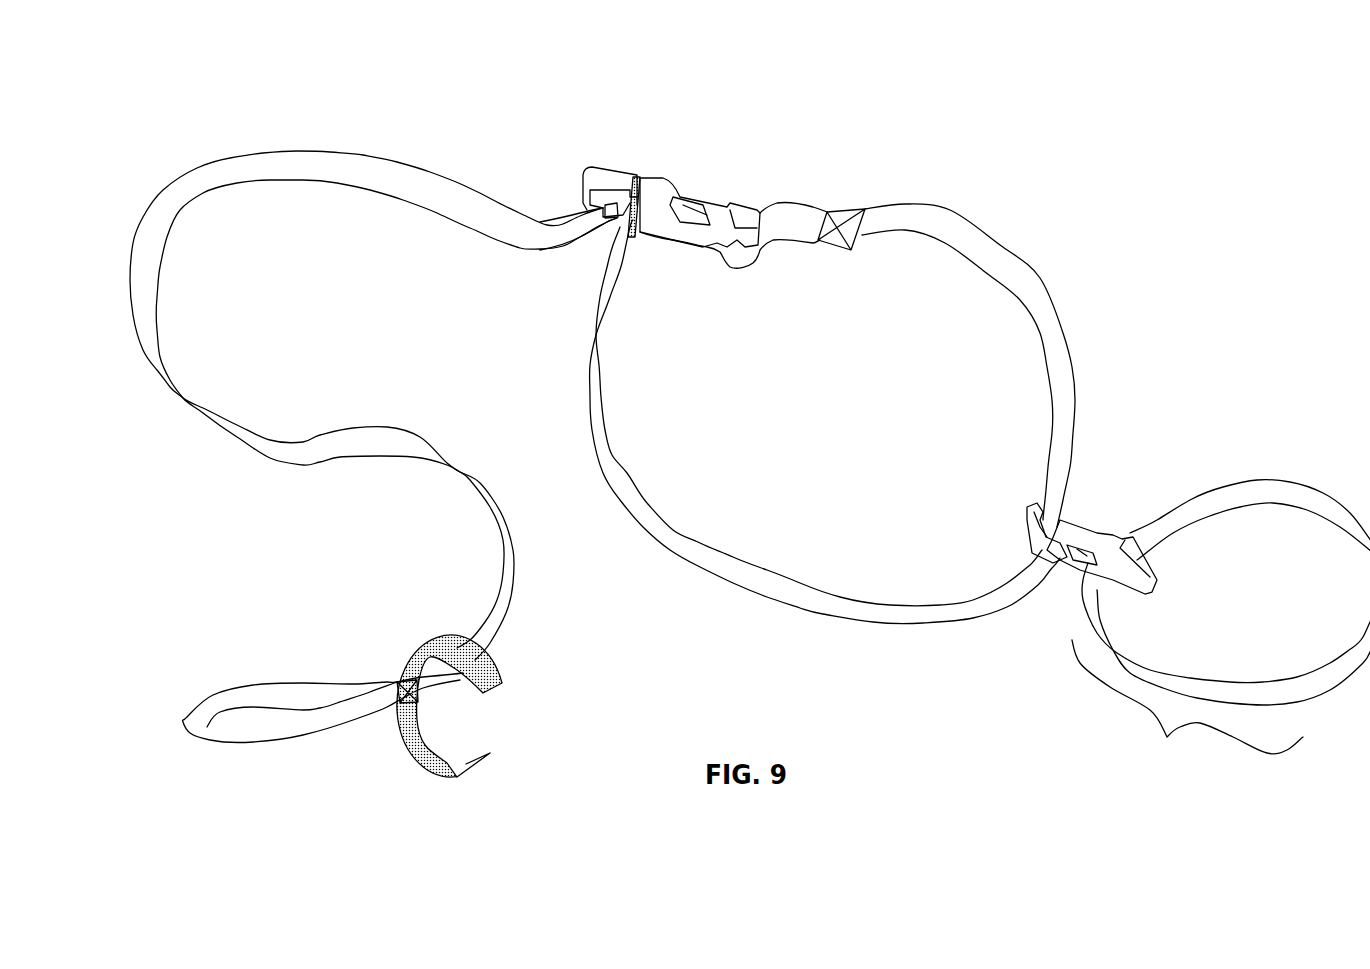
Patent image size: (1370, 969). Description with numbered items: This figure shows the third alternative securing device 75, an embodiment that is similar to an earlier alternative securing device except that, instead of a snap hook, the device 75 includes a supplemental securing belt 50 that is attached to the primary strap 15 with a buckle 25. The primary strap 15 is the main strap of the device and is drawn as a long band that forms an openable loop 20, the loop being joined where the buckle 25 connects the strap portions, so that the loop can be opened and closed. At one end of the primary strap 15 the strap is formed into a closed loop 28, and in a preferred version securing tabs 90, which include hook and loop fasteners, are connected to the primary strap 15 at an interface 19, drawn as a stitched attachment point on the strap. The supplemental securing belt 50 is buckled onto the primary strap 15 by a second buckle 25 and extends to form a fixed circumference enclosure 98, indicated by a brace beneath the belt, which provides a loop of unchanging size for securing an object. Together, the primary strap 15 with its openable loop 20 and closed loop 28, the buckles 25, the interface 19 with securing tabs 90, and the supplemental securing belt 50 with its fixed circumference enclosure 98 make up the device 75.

The primary strap 15 is at (213, 172).
The interface 19 is at (837, 213).
The openable loop 20 is at (970, 220).
The buckle 25 is at (657, 190).
The closed loop 28 is at (287, 733).
The supplemental securing belt 50 is at (1257, 483).
The third alternative securing device embodiment 75 is at (738, 133).
The securing tabs 90 is at (435, 770).
The fixed circumference enclosure 98 is at (1187, 702).